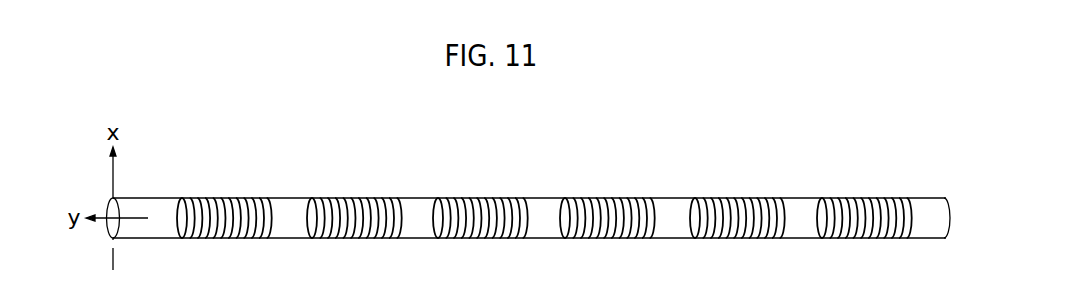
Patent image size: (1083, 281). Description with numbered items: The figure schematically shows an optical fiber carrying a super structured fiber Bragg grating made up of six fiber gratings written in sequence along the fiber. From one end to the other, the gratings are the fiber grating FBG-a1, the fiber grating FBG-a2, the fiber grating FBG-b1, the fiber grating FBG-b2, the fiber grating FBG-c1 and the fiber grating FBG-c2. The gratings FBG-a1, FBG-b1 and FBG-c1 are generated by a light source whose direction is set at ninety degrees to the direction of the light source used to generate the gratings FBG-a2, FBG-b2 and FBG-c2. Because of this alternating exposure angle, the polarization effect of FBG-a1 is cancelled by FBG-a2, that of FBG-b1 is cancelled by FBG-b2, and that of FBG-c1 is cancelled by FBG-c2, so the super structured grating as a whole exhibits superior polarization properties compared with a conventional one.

The fiber grating FBG-a1 is at (233, 208).
The fiber grating FBG-a2 is at (360, 208).
The fiber grating FBG-b1 is at (488, 208).
The fiber grating FBG-b2 is at (617, 208).
The fiber grating FBG-c1 is at (743, 208).
The fiber grating FBG-c2 is at (872, 208).